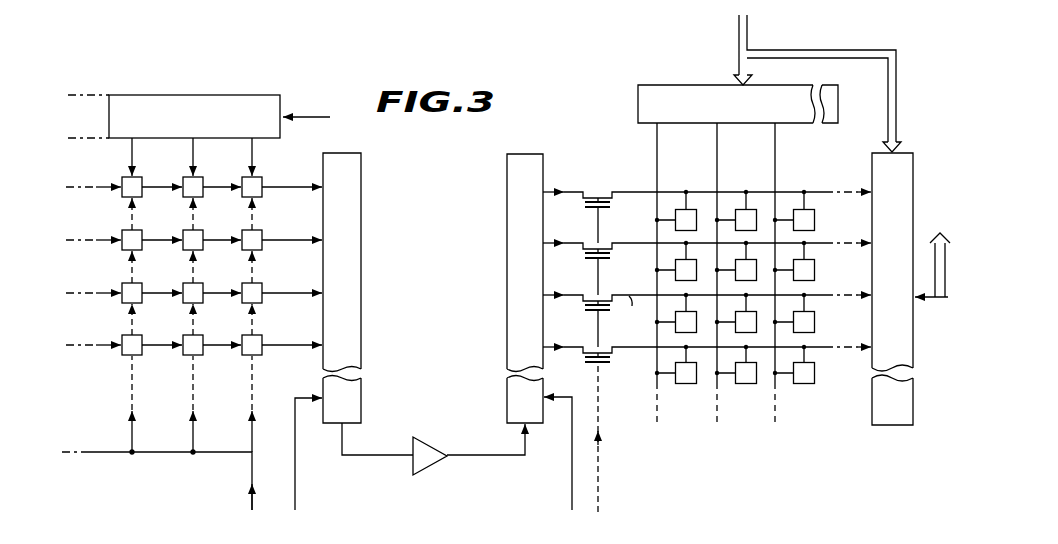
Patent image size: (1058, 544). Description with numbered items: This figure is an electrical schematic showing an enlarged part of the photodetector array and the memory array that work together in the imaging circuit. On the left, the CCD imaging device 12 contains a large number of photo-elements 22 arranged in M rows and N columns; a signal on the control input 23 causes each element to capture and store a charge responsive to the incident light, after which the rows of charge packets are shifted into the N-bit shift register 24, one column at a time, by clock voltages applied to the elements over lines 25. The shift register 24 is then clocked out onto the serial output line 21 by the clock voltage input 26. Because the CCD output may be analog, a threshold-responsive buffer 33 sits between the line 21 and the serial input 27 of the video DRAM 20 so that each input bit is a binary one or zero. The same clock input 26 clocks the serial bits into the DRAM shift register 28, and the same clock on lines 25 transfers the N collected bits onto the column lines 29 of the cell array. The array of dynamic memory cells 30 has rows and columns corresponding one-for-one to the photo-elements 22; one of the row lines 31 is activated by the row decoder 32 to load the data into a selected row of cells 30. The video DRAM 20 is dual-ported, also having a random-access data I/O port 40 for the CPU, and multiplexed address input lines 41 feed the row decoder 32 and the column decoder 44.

The CCD imaging device 12 is at (199, 92).
The video DRAM 20 is at (611, 145).
The line 21 is at (391, 456).
The photo-elements 22 is at (130, 228).
The control input 23 is at (315, 116).
The N-bit shift register 24 is at (357, 202).
The lines 25 is at (253, 222).
The clock voltage input 26 is at (297, 500).
The serial input 27 is at (470, 455).
The shift register 28 is at (512, 173).
The column lines 29 is at (627, 193).
The dynamic memory cells 30 is at (813, 227).
The row lines 31 is at (656, 168).
The row decoder 32 is at (638, 105).
The threshold-responsive buffer 33 is at (425, 437).
The data I/O port 40 is at (937, 299).
The address input lines 41 is at (738, 42).
The column decoder 44 is at (878, 162).